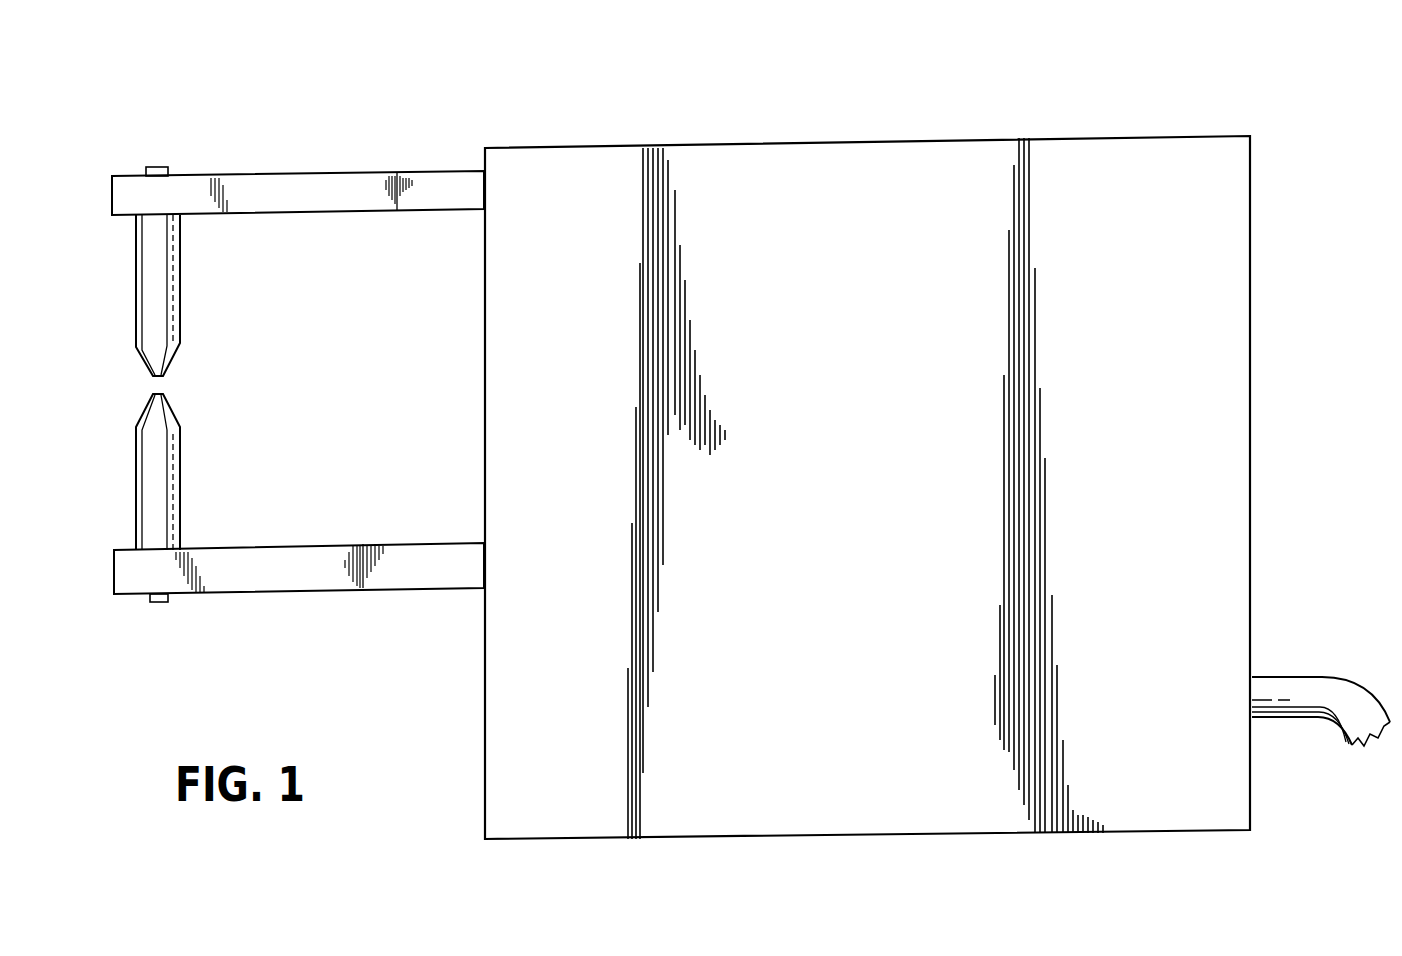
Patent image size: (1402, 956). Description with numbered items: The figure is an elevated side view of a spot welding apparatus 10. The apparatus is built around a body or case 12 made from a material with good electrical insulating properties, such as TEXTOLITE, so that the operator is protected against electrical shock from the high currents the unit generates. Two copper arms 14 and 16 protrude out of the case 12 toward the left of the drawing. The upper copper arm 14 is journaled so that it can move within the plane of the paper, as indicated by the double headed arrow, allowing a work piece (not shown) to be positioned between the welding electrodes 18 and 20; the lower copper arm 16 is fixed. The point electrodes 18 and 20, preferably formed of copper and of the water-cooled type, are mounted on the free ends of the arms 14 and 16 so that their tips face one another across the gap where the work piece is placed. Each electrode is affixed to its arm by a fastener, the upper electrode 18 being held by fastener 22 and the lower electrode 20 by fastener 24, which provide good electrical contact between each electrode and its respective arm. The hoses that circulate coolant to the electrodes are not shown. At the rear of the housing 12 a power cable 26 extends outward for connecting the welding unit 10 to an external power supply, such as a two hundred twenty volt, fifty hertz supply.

The spot welding apparatus 10 is at (444, 138).
The body or case 12 is at (565, 148).
The copper arm 14 is at (293, 170).
The copper arm 16 is at (295, 592).
The welding electrode 18 is at (180, 298).
The welding electrode 20 is at (182, 485).
The fastener 22 is at (158, 167).
The fastener 24 is at (168, 602).
The power cable 26 is at (1338, 752).